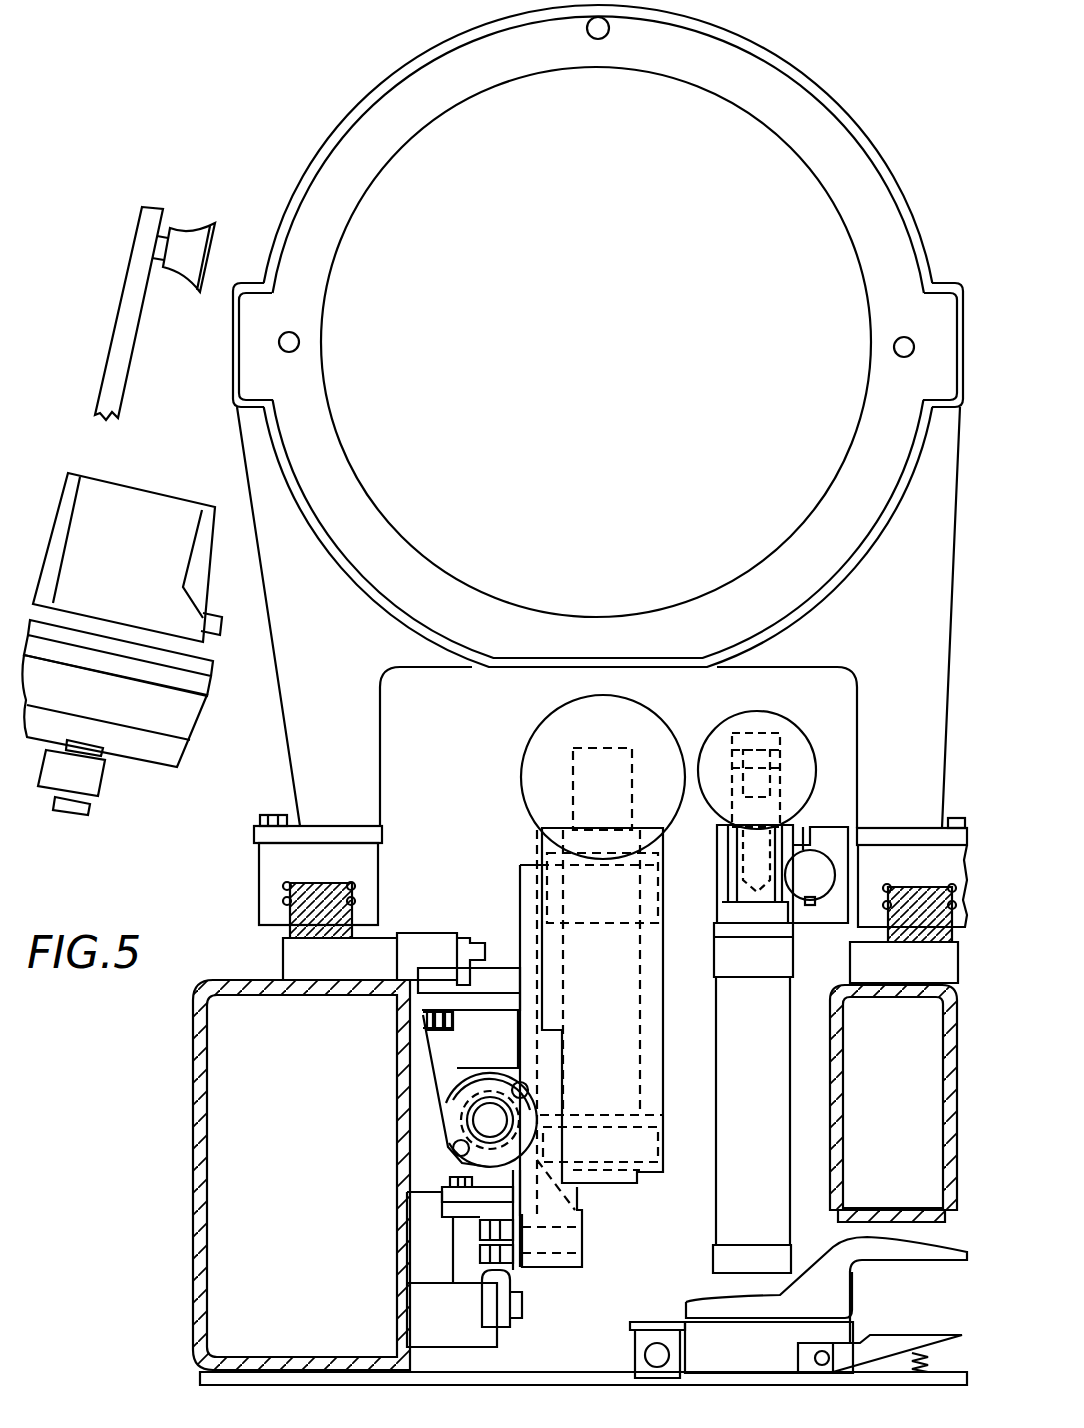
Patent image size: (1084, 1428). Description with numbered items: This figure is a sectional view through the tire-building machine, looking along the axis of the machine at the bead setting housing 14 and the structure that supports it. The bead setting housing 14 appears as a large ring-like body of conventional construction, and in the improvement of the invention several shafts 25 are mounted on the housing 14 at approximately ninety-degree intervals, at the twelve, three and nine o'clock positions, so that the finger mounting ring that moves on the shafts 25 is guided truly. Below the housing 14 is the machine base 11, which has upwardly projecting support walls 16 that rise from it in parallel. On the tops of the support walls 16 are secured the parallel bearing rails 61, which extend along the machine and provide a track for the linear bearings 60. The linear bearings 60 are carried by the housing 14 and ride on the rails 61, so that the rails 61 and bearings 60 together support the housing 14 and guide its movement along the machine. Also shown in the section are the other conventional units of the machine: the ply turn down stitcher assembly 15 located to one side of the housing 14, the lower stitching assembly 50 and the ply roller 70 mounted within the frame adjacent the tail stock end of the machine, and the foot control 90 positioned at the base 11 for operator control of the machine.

The machine base 11 is at (198, 1380).
The bead setting housing 14 is at (838, 97).
The ply turn down stitcher assembly 15 is at (203, 208).
The support wall 16 is at (195, 1125).
The shaft 25 is at (598, 40).
The lower stitching assembly 50 is at (540, 722).
The linear bearing 60 is at (270, 857).
The bearing rail 61 is at (300, 925).
The ply roller 70 is at (775, 715).
The foot control 90 is at (697, 1285).